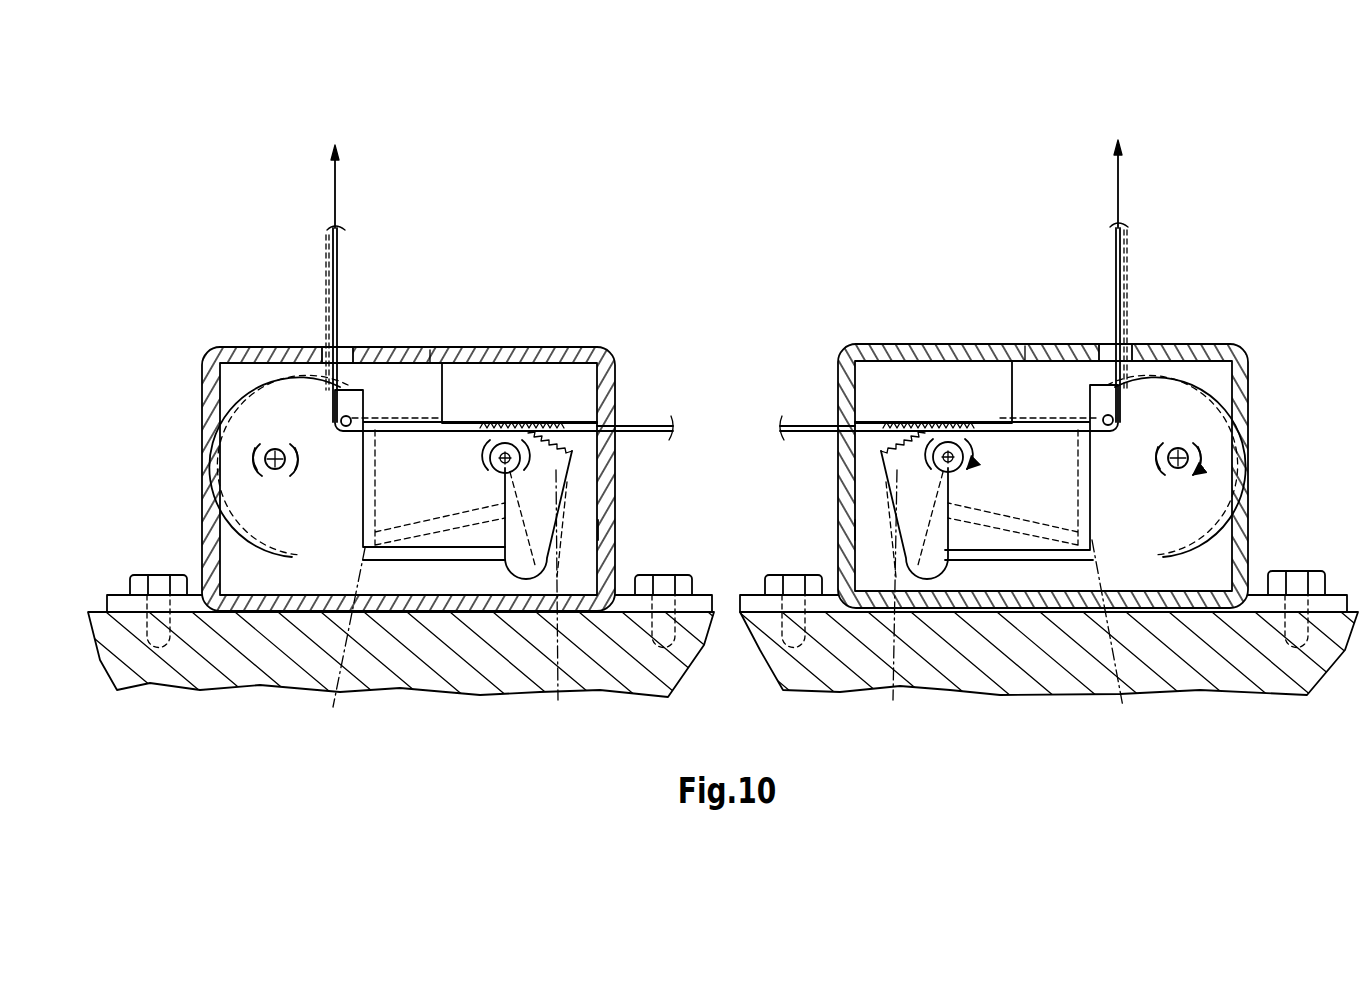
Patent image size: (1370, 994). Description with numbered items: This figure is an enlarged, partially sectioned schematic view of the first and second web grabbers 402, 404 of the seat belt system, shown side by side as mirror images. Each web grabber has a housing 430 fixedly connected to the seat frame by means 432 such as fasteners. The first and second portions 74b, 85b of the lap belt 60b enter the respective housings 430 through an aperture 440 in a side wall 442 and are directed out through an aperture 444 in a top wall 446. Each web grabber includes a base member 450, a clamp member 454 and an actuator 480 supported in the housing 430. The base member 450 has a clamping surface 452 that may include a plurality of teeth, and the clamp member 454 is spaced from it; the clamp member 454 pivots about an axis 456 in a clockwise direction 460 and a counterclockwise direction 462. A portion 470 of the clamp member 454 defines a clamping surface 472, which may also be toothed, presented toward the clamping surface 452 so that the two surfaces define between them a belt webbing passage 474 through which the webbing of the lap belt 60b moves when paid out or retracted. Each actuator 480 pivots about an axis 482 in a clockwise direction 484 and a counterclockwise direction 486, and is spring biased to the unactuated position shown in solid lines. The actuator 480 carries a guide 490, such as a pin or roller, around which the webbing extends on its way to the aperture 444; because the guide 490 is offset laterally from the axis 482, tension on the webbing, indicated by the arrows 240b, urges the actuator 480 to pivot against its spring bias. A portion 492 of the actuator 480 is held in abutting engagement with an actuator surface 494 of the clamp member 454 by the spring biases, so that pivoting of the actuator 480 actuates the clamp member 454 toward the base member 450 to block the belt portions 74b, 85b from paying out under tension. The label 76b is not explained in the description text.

The first web grabber 402 is at (960, 246).
The second web grabber 404 is at (480, 254).
The housing 430 is at (517, 353).
The means 432 is at (160, 580).
The aperture 440 is at (607, 428).
The side wall 442 is at (606, 530).
The aperture 444 is at (352, 350).
The top wall 446 is at (432, 350).
The base member 450 is at (553, 385).
The clamping surface 452 is at (420, 432).
The clamp member 454 is at (536, 538).
The axis 456 is at (500, 472).
The arrow 460 is at (522, 450).
The arrow 462 is at (487, 452).
The portion 470 is at (550, 472).
The clamping surface 472 is at (556, 424).
The belt webbing passage 474 is at (560, 437).
The actuator 480 is at (308, 535).
The axis 482 is at (272, 449).
The arrow 484 is at (295, 452).
The arrow 486 is at (263, 459).
The guide 490 is at (352, 417).
The portion 492 is at (488, 553).
The actuator surface 494 is at (500, 540).
The lap belt 60b is at (780, 430).
The arrows 240b is at (333, 190).
The second portion 85b is at (328, 290).
The second door 76b is at (297, 114).
The first portion 74b is at (1193, 264).